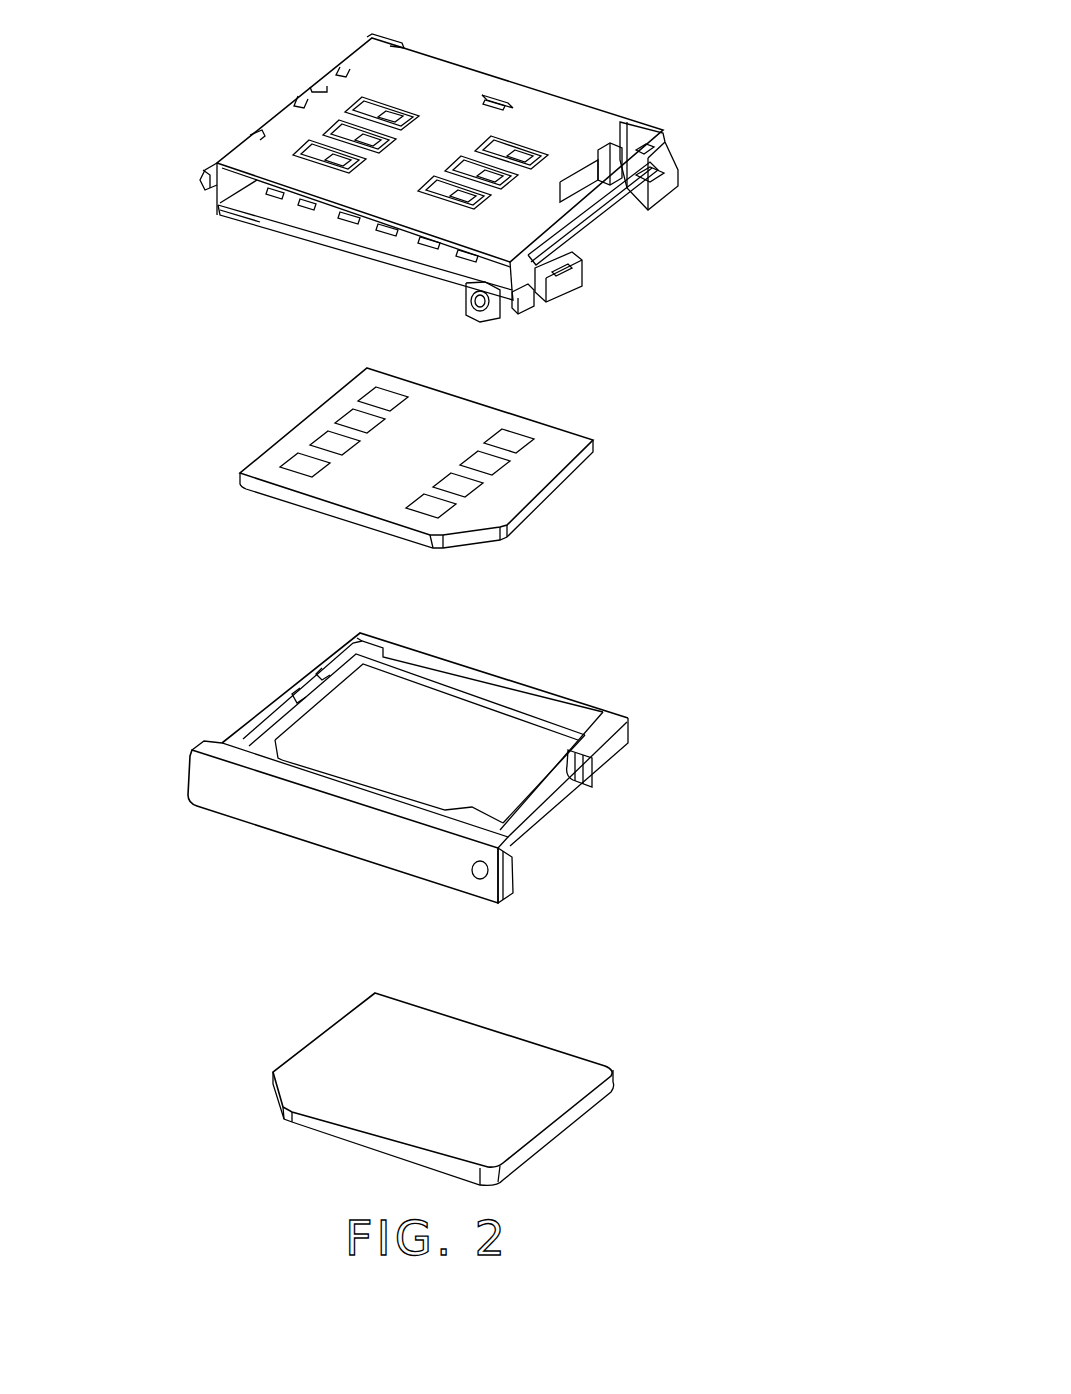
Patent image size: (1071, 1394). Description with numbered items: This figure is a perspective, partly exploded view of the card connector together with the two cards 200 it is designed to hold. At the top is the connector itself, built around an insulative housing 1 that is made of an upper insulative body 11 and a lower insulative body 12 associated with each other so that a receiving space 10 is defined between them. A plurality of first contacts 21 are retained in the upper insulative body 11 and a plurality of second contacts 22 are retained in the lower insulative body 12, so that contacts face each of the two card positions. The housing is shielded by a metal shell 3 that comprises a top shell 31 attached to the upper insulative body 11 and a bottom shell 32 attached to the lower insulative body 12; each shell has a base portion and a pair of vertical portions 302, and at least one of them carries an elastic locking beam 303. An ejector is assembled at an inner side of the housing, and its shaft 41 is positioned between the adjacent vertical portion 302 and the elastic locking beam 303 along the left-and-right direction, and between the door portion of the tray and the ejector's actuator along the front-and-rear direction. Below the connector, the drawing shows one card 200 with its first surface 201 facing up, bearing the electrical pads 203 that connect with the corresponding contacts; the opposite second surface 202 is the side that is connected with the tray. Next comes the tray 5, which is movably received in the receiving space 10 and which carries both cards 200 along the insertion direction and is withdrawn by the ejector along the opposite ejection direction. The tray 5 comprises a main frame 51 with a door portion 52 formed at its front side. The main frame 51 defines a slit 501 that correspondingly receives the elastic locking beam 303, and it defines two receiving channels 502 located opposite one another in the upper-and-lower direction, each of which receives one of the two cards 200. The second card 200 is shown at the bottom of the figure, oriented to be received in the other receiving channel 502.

The insulative housing 1 is at (422, 199).
The receiving space 10 is at (298, 215).
The upper insulative body 11 is at (210, 200).
The lower insulative body 12 is at (227, 213).
The first contacts 21 is at (512, 147).
The second contacts 22 is at (433, 238).
The metal shell 3 is at (632, 213).
The top shell 31 is at (553, 267).
The bottom shell 32 is at (556, 320).
The shaft 41 is at (597, 205).
The vertical portions 302 is at (657, 152).
The elastic locking beam 303 is at (600, 158).
The card 200 is at (430, 776).
The first surface 201 is at (558, 465).
The second surface 202 is at (568, 493).
The electrical pads 203 is at (493, 465).
The tray 5 is at (439, 770).
The main frame 51 is at (463, 753).
The slit 501 is at (583, 783).
The receiving channels 502 is at (460, 733).
The tray handle / front cap 52 is at (343, 830).